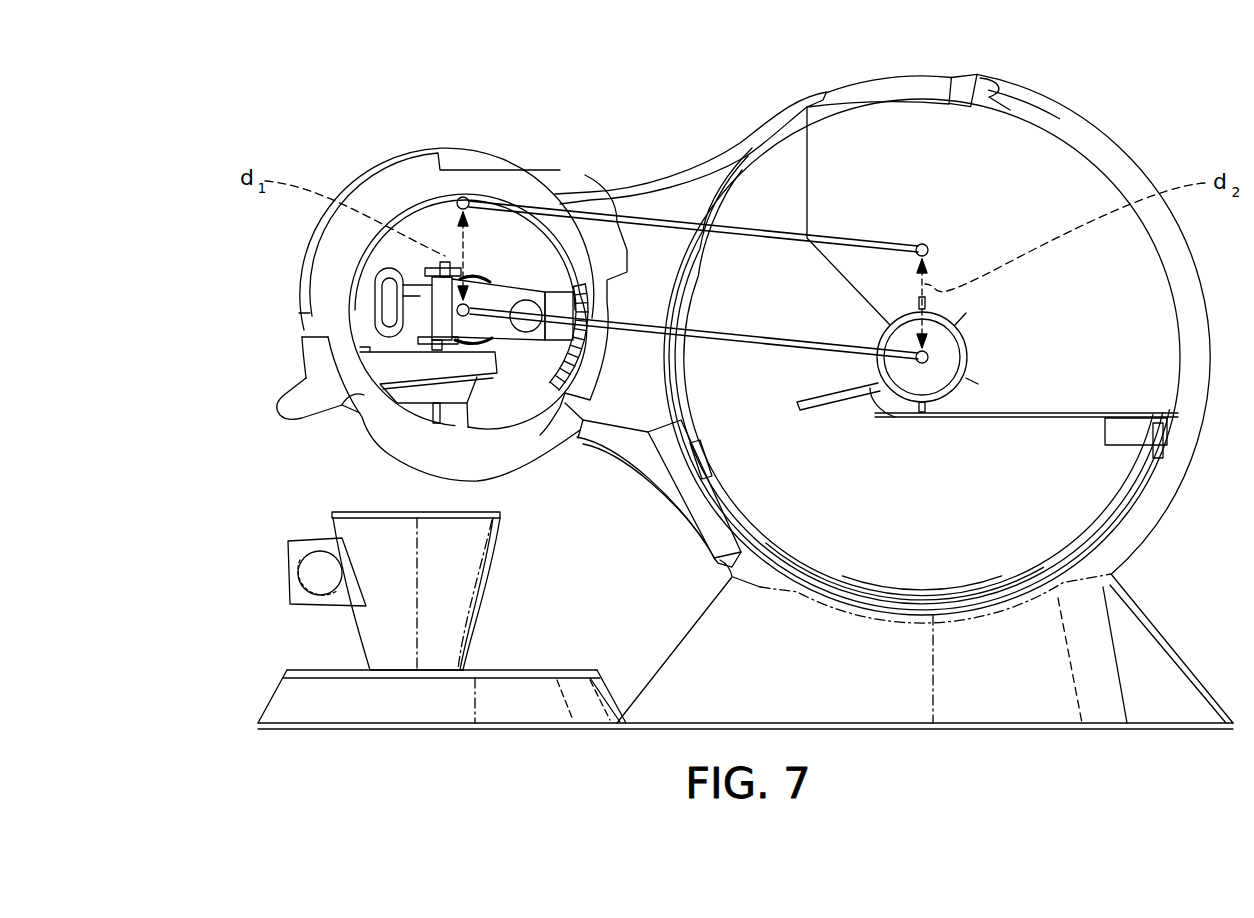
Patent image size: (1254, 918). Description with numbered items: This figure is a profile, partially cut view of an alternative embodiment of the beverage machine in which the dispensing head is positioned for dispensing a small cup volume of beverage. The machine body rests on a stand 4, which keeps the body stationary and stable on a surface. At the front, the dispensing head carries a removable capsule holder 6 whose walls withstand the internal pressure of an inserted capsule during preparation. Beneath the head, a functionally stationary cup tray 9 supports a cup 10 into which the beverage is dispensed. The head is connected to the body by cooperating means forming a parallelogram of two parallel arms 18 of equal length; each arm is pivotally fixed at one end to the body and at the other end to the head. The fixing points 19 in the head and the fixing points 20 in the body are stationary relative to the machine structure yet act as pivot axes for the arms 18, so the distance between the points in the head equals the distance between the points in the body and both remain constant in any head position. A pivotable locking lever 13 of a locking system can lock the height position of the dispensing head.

The stand 4 is at (1152, 655).
The removable capsule holder 6 is at (278, 410).
The cup tray 9 is at (298, 705).
The cup 10 is at (383, 537).
The pivotable locking lever 13 is at (395, 292).
The parallel arms 18 is at (623, 240).
The fixing points 19 is at (462, 196).
The fixing points 20 is at (922, 243).